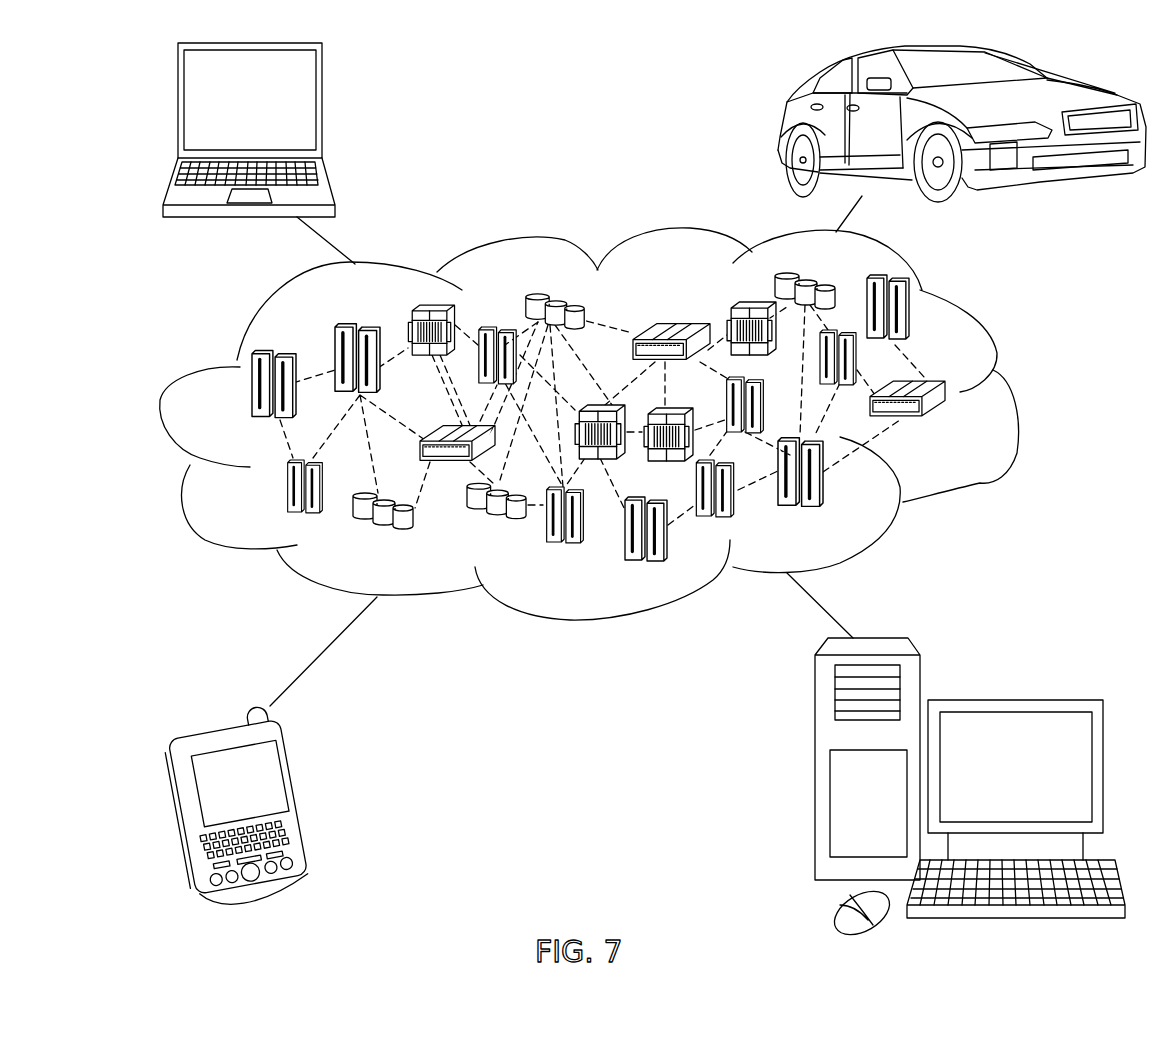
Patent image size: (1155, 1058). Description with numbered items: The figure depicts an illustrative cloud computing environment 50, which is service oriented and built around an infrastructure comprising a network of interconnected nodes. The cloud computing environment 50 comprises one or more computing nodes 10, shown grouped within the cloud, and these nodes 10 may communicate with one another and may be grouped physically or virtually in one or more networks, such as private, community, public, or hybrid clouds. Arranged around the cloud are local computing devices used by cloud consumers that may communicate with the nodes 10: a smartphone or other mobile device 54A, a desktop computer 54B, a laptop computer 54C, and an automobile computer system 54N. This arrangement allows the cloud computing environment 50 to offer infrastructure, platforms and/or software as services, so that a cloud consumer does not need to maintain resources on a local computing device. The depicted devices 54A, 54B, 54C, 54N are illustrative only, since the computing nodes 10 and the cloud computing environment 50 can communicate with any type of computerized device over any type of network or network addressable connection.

The computing node 10 is at (950, 426).
The cloud computing environment 50 is at (1012, 395).
The smartphone or other mobile device 54A is at (312, 798).
The desktop computer 54B is at (1012, 700).
The laptop computer 54C is at (322, 108).
The automobile computer system 54N is at (781, 124).